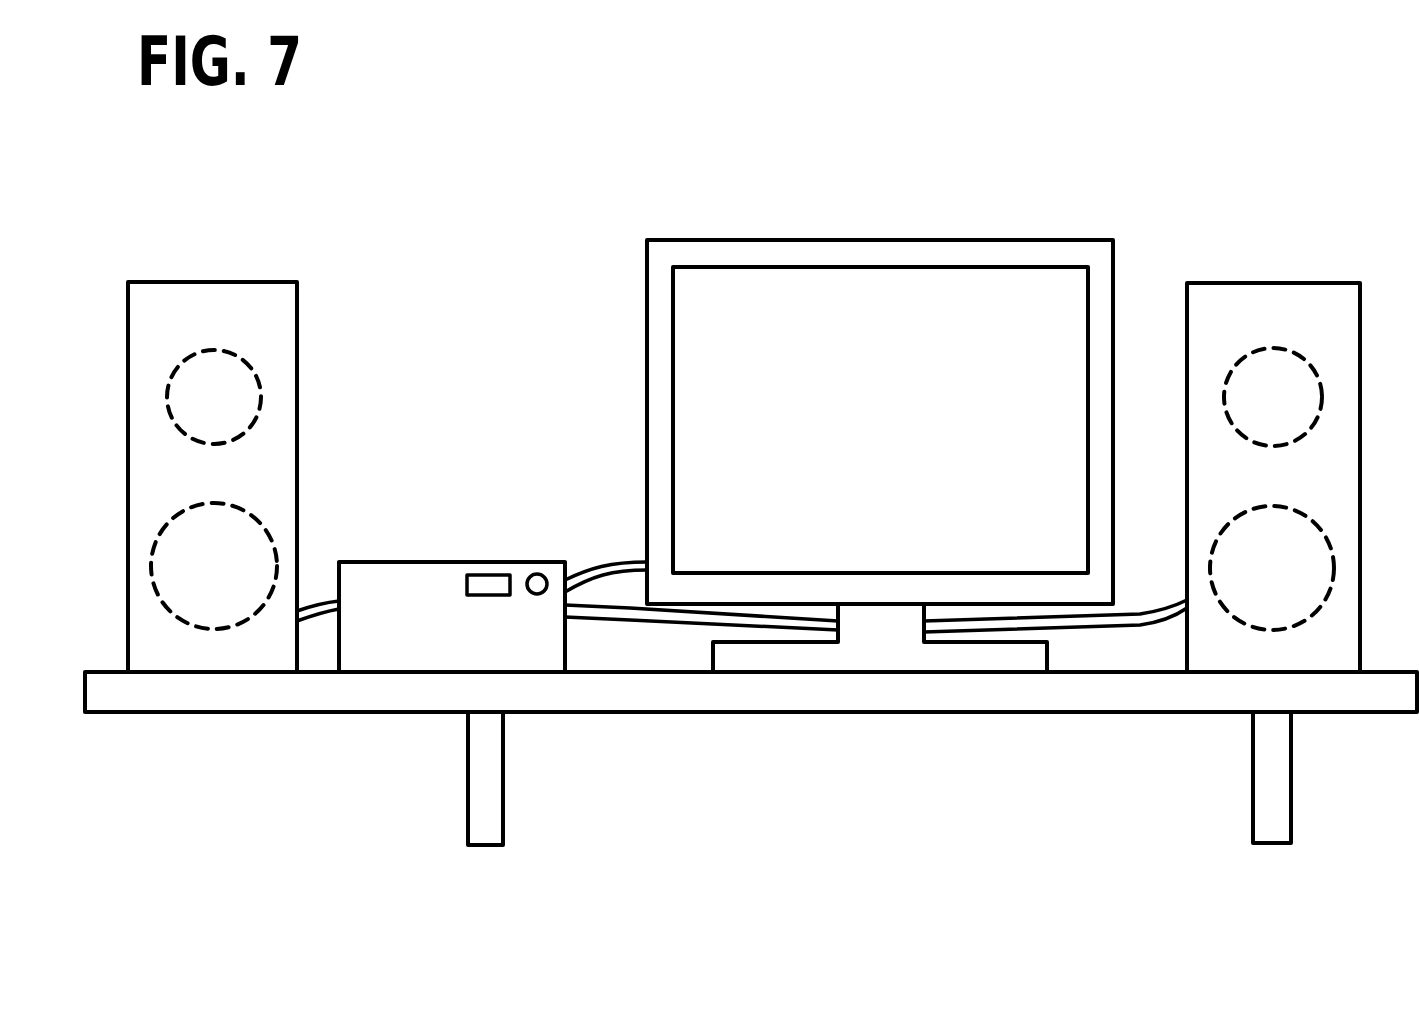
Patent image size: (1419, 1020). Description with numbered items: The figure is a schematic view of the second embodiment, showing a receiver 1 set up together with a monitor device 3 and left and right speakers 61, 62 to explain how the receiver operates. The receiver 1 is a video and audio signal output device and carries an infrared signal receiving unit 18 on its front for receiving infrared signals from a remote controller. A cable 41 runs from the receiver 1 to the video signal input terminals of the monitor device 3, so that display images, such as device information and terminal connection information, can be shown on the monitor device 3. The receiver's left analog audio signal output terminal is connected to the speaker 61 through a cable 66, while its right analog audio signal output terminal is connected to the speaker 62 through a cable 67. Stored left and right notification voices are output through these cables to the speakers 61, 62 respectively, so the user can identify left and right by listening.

The receiver 1 is at (360, 560).
The monitor device 3 is at (911, 212).
The infrared signal receiving unit 18 is at (477, 580).
The cable 41 is at (615, 560).
The speaker 61 is at (173, 282).
The speaker 62 is at (1241, 283).
The cable 66 is at (313, 605).
The cable 67 is at (1140, 605).